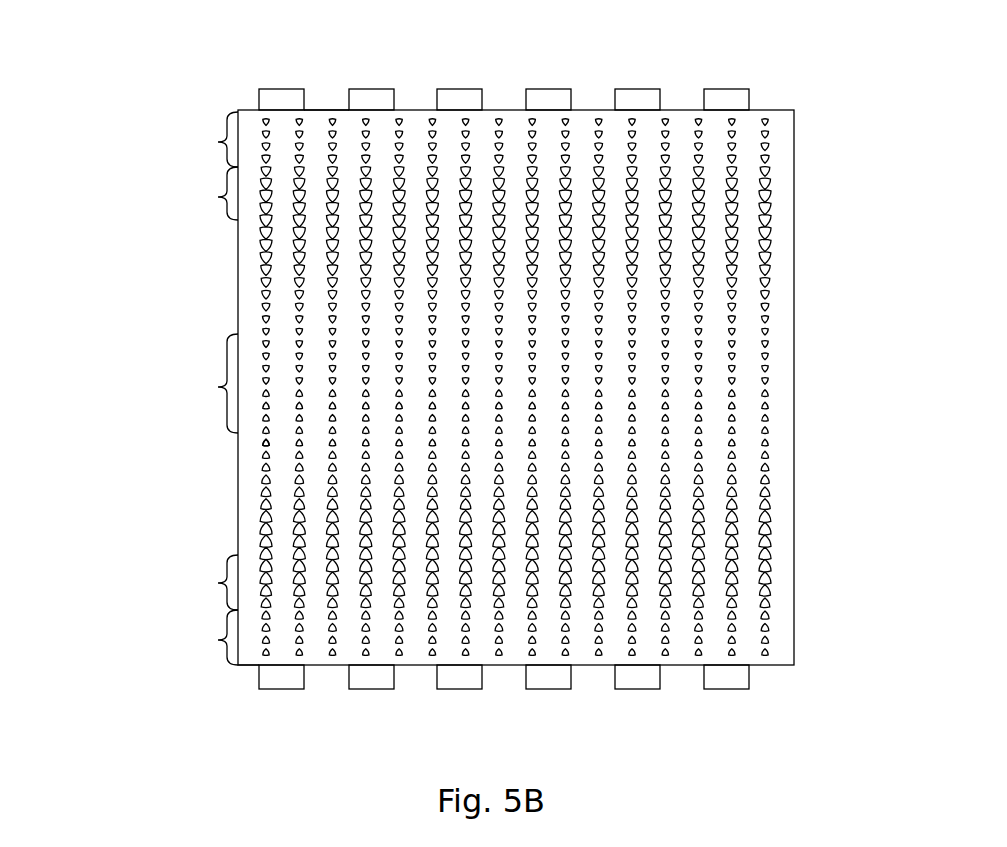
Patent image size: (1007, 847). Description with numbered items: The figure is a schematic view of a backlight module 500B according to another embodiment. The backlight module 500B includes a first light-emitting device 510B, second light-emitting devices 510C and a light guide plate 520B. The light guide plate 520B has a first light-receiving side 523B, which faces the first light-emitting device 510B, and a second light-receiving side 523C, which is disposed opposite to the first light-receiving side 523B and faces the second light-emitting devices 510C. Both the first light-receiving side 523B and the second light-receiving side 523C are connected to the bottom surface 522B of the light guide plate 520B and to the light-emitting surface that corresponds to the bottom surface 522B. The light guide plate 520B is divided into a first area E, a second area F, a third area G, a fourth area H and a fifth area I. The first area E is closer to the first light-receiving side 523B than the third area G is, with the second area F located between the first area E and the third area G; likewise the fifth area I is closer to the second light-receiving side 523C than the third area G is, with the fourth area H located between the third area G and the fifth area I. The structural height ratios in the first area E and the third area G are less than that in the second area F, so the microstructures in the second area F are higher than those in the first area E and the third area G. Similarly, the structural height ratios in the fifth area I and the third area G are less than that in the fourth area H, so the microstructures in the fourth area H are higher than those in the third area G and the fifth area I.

The backlight module 500B is at (82, 133).
The first light-emitting device 510B is at (258, 100).
The second light-emitting devices 510C is at (749, 686).
The light guide plate 520B is at (393, 387).
The bottom surface 522B is at (262, 439).
The first light-receiving side 523B is at (346, 109).
The second light-receiving side 523C is at (249, 666).
The first area E is at (217, 142).
The second area F is at (217, 197).
The third area G is at (217, 387).
The fourth area H is at (217, 583).
The fifth area I is at (217, 640).